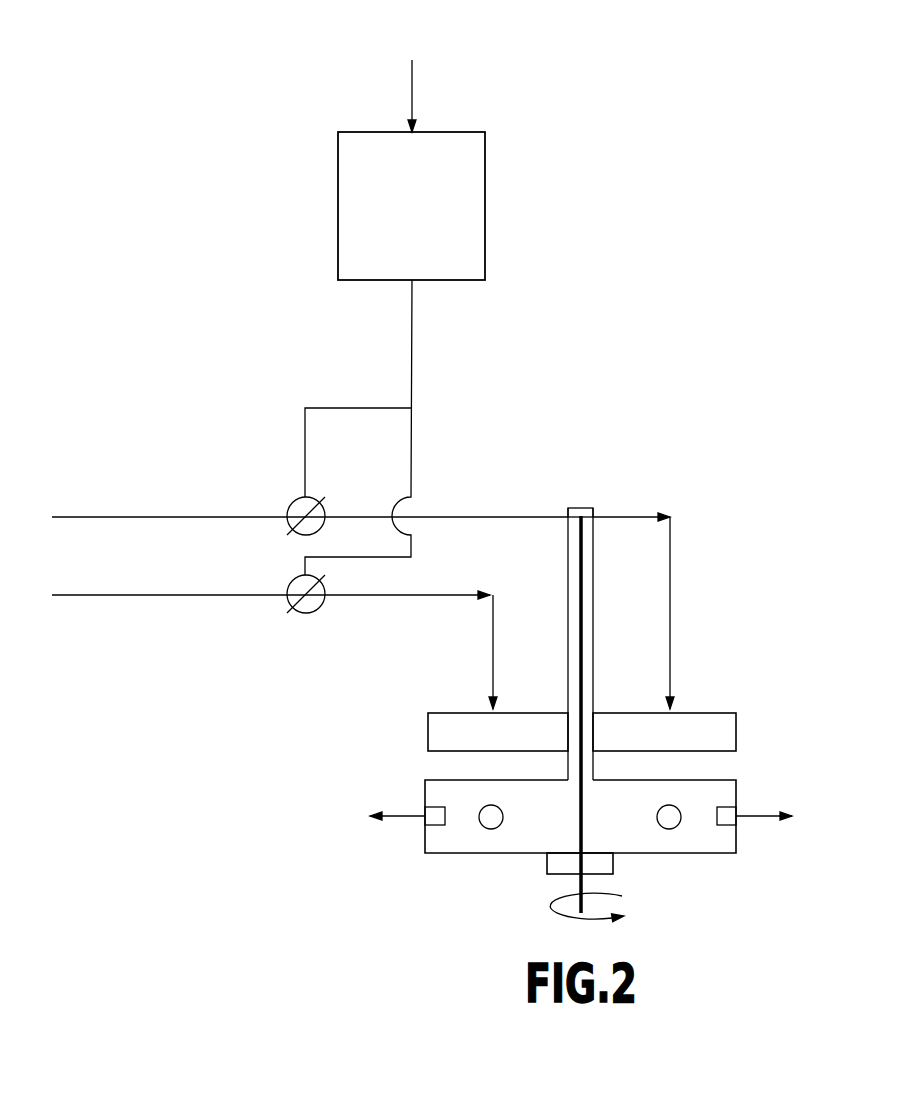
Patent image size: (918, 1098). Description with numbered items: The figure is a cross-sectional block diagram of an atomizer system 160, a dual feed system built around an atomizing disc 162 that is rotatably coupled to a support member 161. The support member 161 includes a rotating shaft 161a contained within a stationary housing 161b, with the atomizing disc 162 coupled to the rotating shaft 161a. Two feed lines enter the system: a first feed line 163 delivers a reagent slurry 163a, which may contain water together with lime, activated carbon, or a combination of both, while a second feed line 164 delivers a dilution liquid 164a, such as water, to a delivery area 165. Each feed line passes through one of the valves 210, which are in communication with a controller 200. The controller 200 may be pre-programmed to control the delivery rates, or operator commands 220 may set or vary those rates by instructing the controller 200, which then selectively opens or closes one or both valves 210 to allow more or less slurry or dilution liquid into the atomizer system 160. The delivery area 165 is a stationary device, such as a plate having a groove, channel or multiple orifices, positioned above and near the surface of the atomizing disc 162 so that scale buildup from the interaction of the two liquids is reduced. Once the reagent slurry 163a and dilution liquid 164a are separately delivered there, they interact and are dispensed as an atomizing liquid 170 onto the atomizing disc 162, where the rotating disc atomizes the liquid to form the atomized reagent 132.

The operator commands 220 is at (412, 83).
The controller 200 is at (485, 178).
The atomizer system 160 is at (557, 310).
The valves 210 is at (292, 505).
The first feed line 163 is at (118, 515).
The second feed line 164 is at (113, 597).
The reagent slurry 163a is at (670, 650).
The dilution liquid 164a is at (493, 690).
The support member 161 is at (545, 550).
The rotating shaft 161a is at (583, 665).
The stationary housing 161b is at (620, 597).
The delivery area 165 is at (737, 725).
The atomizing liquid 170 is at (545, 776).
The atomizing disc 162 is at (719, 780).
The atomized reagent 132 is at (403, 822).